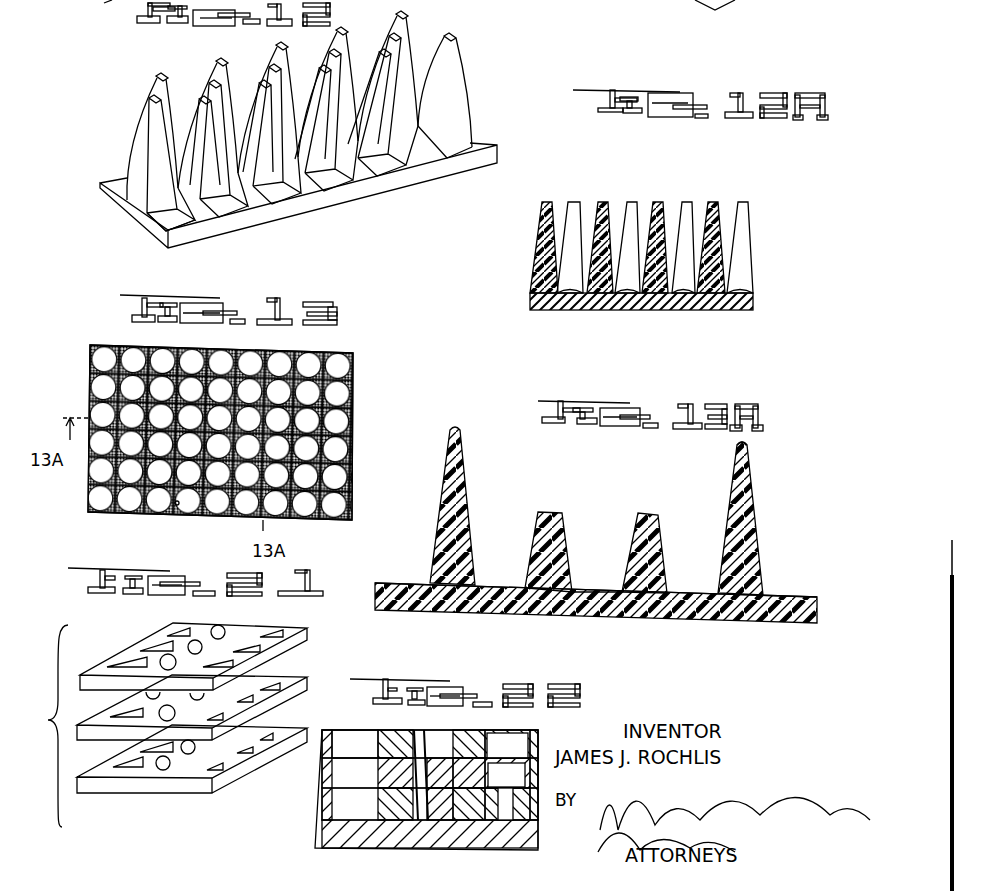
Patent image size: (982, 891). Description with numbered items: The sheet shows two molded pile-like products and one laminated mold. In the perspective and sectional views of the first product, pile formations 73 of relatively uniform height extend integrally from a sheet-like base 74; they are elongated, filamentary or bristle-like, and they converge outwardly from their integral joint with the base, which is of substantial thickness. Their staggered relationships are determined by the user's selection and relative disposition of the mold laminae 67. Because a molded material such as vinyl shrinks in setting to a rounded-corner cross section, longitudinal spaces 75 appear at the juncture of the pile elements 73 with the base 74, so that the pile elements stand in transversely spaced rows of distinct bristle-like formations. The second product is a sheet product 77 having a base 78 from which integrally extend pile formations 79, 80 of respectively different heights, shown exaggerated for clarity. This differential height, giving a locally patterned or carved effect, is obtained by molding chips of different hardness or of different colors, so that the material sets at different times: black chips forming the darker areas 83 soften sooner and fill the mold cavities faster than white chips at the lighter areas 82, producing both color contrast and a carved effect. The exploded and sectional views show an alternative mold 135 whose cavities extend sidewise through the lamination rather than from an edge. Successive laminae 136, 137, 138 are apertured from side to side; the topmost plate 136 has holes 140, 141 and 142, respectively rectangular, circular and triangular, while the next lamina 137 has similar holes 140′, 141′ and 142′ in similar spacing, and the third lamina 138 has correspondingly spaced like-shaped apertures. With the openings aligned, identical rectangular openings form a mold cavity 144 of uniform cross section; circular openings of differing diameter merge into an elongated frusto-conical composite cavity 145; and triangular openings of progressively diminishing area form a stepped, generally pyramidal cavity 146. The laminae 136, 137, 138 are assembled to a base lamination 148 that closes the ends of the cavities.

In FIG. 12, the mold laminae 67 is at (104, 3).
In FIG. 12, the pile formations 73 is at (143, 152).
In FIG. 12A, the pile formations 73 is at (542, 258).
In FIG. 12, the sheet-like base 74 is at (380, 182).
In FIG. 12A, the sheet-like base 74 is at (627, 300).
In FIG. 12, the longitudinal spaces 75 is at (170, 213).
In FIG. 12A, the longitudinal spaces 75 is at (577, 293).
In FIG. 13A, the sheet product 77 is at (455, 622).
In FIG. 13A, the base 78 is at (567, 600).
In FIG. 13A, the pile formations 79 is at (447, 540).
In FIG. 13A, the pile formations 80 is at (640, 557).
In FIG. 13, the contrasty areas 82 is at (100, 483).
In FIG. 13A, the contrasty areas 82 is at (607, 511).
In FIG. 13, the darker areas 83 is at (177, 503).
In FIG. 13A, the darker areas 83 is at (777, 484).
In FIG. 22, the mold 135 is at (553, 742).
In FIG. 21, the topmost plate 136 is at (316, 640).
In FIG. 22, the topmost plate 136 is at (323, 730).
In FIG. 21, the lamina 137 is at (297, 678).
In FIG. 22, the lamina 137 is at (323, 770).
In FIG. 21, the lamina 138 is at (270, 773).
In FIG. 22, the lamina 138 is at (323, 805).
In FIG. 21, the holes 140 is at (125, 660).
In FIG. 22, the holes 140 is at (367, 740).
In FIG. 21, the holes 141 is at (217, 625).
In FIG. 22, the holes 141 is at (418, 737).
In FIG. 21, the holes 142 is at (273, 632).
In FIG. 22, the holes 142 is at (520, 757).
In FIG. 22, the holes 140′ is at (370, 785).
In FIG. 21, the holes 141′ is at (165, 713).
In FIG. 22, the holes 141′ is at (433, 773).
In FIG. 21, the holes 142′ is at (267, 687).
In FIG. 22, the holes 142′ is at (503, 780).
In FIG. 22, the mold cavity 144 is at (353, 735).
In FIG. 22, the composite cavity 145 is at (446, 727).
In FIG. 22, the pyramidal cavity 146 is at (509, 727).
In FIG. 22, the base lamination 148 is at (330, 833).